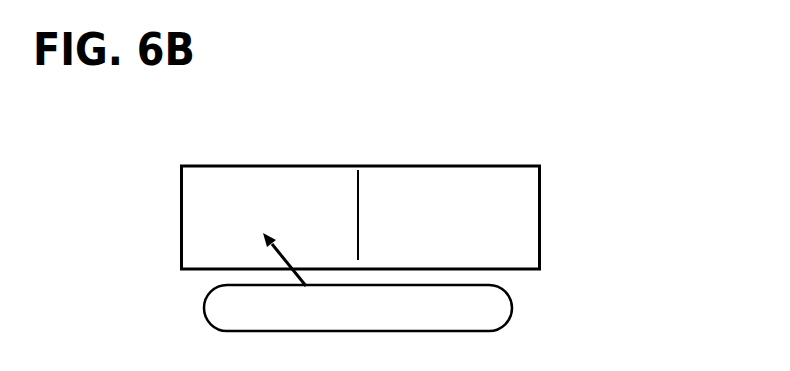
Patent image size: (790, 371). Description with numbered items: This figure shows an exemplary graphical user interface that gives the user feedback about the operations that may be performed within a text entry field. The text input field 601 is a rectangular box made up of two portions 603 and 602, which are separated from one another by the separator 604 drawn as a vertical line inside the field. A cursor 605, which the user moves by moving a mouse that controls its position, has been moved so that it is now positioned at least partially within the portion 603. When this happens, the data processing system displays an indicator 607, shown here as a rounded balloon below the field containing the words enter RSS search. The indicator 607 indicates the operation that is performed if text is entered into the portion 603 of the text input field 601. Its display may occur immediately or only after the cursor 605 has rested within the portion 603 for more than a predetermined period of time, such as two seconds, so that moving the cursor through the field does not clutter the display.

The text input field 601 is at (556, 220).
The portion 602 is at (467, 173).
The portion 603 is at (248, 172).
The separator 604 is at (359, 187).
The cursor 605 is at (272, 250).
The indicator 607 is at (514, 308).